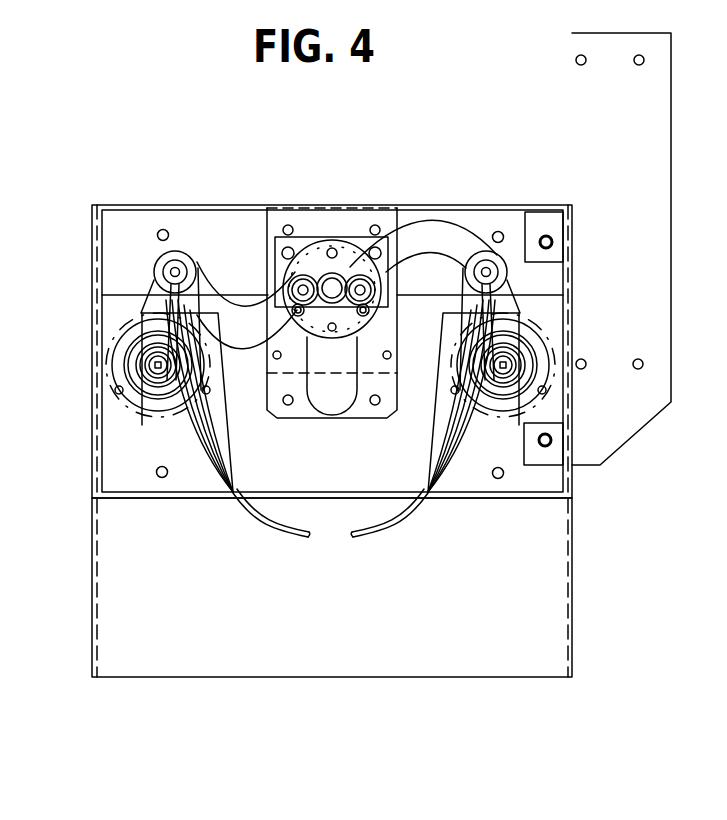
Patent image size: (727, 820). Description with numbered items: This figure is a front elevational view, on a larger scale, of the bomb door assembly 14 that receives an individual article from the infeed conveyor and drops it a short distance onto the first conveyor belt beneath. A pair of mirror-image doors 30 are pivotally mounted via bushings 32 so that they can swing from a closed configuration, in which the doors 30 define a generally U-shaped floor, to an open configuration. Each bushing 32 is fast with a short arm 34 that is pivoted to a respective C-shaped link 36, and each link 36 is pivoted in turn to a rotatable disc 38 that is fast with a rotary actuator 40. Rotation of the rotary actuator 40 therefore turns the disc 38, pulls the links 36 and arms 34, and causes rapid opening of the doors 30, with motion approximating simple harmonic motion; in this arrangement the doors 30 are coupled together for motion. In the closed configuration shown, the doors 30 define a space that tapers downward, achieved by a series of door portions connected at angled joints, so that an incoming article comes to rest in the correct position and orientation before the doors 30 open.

The bomb door assembly 14 is at (368, 136).
The doors 30 is at (316, 542).
The bushings 32 is at (148, 420).
The short arm 34 is at (152, 280).
The C-shaped link 36 is at (243, 312).
The rotatable disc 38 is at (323, 240).
The rotary actuator 40 is at (325, 436).